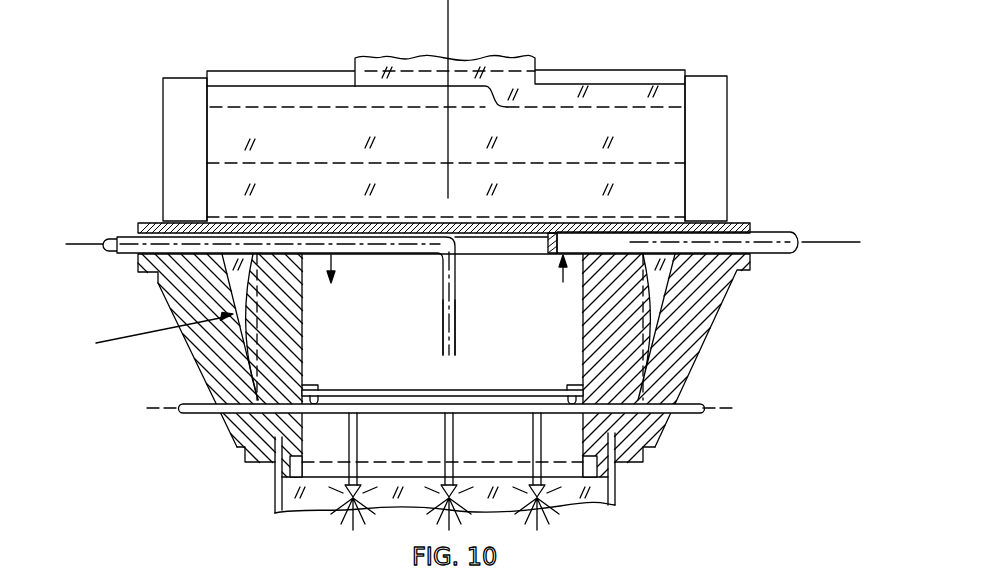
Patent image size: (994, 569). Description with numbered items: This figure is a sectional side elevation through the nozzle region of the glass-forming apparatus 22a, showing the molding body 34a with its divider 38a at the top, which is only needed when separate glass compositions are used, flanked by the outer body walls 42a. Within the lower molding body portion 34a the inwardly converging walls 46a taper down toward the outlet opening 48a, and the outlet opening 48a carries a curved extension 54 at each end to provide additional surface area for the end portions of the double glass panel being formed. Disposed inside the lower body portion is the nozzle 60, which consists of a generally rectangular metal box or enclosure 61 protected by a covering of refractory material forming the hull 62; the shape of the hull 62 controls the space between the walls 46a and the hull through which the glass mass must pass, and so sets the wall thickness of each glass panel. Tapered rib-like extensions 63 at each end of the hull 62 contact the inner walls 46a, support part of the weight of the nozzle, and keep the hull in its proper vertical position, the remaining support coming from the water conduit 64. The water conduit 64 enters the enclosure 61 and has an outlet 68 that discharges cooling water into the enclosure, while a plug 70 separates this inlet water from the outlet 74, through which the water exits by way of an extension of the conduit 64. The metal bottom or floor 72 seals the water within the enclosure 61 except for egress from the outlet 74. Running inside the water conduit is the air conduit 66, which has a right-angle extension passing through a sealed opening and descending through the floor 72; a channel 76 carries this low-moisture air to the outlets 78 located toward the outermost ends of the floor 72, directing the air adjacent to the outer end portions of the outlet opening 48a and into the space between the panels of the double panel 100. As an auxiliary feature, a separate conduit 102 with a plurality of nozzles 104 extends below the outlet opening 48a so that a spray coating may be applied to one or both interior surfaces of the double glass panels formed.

The mold assembly 22a is at (732, 149).
The lower molding body portion 34a is at (720, 335).
The divider 38a is at (258, 71).
The retaining ring 42a is at (187, 78).
The inwardly converging walls 46a is at (252, 400).
The outlet opening 48a is at (282, 472).
The curved extensions 54 is at (245, 455).
The nozzle 60 is at (150, 334).
The metal box or enclosure 61 is at (665, 297).
The refractory hull 62 is at (250, 345).
The tapered rib-like extensions 63 is at (255, 372).
The water conduit 64 is at (118, 238).
The air conduit 66 is at (115, 253).
The outlet 68 is at (336, 262).
The plug 70 is at (560, 232).
The metal bottom or floor 72 is at (404, 382).
The outlet 74 is at (562, 272).
The channel 76 is at (356, 390).
The outlets 78 is at (314, 402).
The double panel 100 is at (560, 568).
The separate conduit 102 is at (183, 412).
The nozzles 104 is at (357, 455).